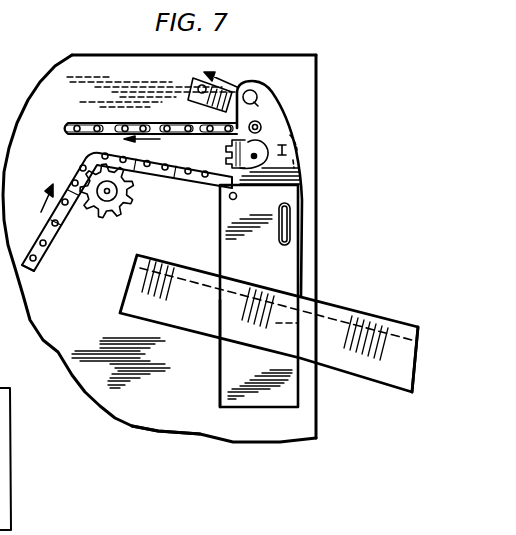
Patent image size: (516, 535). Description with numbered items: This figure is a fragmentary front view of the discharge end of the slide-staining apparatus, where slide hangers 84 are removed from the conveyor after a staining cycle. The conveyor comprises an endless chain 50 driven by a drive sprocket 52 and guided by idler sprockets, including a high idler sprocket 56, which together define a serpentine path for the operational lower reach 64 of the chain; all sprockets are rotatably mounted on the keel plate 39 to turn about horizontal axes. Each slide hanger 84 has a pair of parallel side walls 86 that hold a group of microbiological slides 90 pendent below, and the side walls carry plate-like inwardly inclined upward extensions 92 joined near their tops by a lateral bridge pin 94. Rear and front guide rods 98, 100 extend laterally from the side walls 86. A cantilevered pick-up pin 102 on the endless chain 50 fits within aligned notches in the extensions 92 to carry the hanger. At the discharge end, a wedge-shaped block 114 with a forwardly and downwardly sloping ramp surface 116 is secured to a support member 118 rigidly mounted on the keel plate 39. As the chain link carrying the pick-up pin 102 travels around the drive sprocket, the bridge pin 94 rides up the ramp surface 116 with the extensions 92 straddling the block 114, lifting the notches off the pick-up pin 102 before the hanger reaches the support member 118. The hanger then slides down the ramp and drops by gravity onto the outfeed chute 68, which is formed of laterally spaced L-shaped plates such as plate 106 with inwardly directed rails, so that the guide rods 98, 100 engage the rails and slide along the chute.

The keel plate 39 is at (158, 422).
The endless chain 50 is at (82, 150).
The drive sprocket 52 is at (228, 148).
The high idler sprocket 56 is at (130, 200).
The lower reach 64 is at (42, 262).
The outfeed chute 68 is at (394, 265).
The slide hanger 84 is at (305, 200).
The side wall 86 is at (288, 265).
The microbiological slide 90 is at (221, 380).
The upward extension 92 is at (298, 153).
The lateral bridge pin 94 is at (258, 92).
The rear guide rod 98 is at (290, 226).
The front guide rod 100 is at (230, 200).
The pick-up pin 102 is at (262, 127).
The L-shaped plate 106 is at (412, 324).
The wedge-shaped block 114 is at (182, 88).
The ramp surface 116 is at (194, 73).
The support member 118 is at (207, 101).